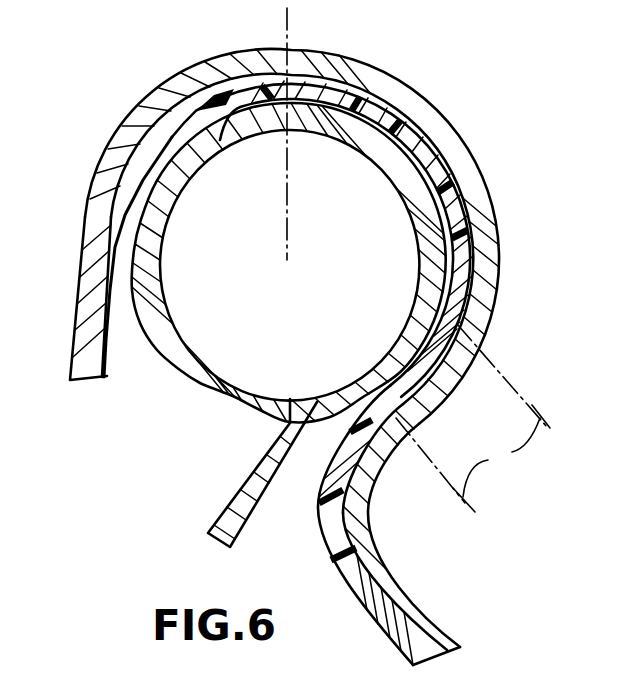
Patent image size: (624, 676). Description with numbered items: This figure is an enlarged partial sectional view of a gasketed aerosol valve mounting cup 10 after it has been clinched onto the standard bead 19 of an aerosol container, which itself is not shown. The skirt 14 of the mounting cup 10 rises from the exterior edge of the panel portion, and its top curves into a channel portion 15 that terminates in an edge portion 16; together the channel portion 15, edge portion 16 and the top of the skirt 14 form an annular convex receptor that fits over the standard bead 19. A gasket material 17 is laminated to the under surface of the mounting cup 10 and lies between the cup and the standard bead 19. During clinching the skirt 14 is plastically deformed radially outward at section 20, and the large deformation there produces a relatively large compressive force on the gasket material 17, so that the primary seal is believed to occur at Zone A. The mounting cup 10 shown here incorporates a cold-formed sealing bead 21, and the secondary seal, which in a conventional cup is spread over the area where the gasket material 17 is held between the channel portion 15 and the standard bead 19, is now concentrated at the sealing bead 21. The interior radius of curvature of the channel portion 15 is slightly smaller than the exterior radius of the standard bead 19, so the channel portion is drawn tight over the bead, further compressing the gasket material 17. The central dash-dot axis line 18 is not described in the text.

The mounting cup 10 is at (489, 141).
The skirt 14 is at (410, 612).
The channel portion 15 is at (138, 116).
The edge portion 16 is at (80, 267).
The gasket material 17 is at (157, 147).
The central axis 18 is at (291, 43).
The standard bead 19 is at (150, 247).
The deformed section of skirt 20 is at (372, 517).
The sealing bead 21 is at (200, 126).